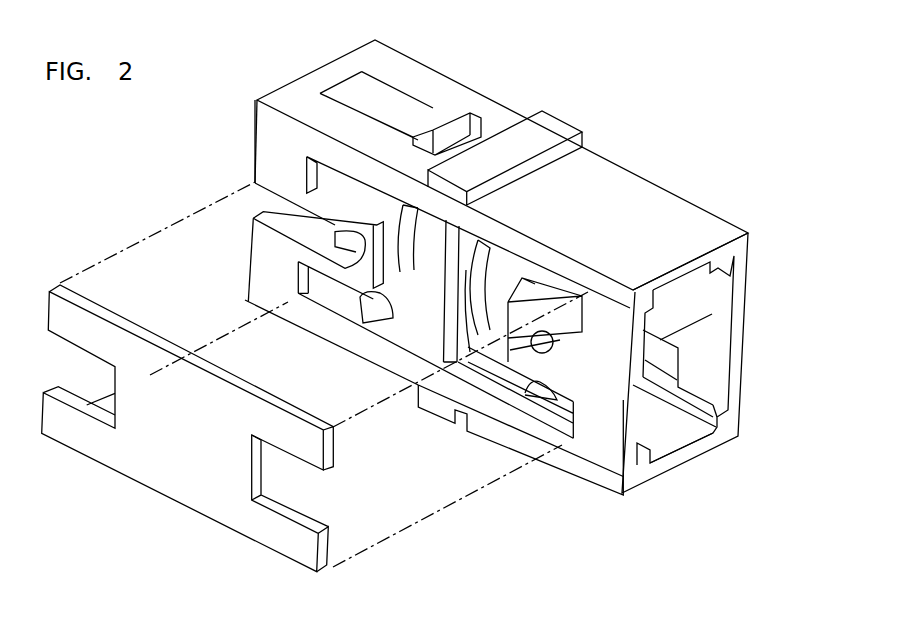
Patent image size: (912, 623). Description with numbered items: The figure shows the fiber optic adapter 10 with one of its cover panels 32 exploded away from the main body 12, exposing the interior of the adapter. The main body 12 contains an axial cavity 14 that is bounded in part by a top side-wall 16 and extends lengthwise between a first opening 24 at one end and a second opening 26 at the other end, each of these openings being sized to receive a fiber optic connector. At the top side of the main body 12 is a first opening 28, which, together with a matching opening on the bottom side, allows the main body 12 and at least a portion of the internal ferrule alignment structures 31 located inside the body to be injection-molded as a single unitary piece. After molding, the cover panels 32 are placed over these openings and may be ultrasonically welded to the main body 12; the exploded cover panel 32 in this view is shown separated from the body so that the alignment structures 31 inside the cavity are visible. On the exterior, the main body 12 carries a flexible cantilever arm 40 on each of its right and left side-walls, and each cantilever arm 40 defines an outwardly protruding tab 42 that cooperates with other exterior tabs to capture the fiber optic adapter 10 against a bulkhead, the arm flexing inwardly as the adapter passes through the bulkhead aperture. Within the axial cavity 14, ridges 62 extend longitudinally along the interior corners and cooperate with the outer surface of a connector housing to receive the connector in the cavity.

The fiber optic adapter 10 is at (404, 303).
The main body 12 is at (728, 228).
The axial cavity 14 is at (686, 318).
The top side-wall 16 is at (603, 468).
The first opening 24 is at (680, 440).
The second opening 26 is at (240, 138).
The first opening 28 is at (333, 283).
The internal ferrule alignment structures 31 is at (420, 310).
The cover panels 32 is at (268, 537).
The flexible cantilever arm 40 is at (410, 113).
The tabs 42 is at (457, 130).
The ridges 62 is at (717, 412).